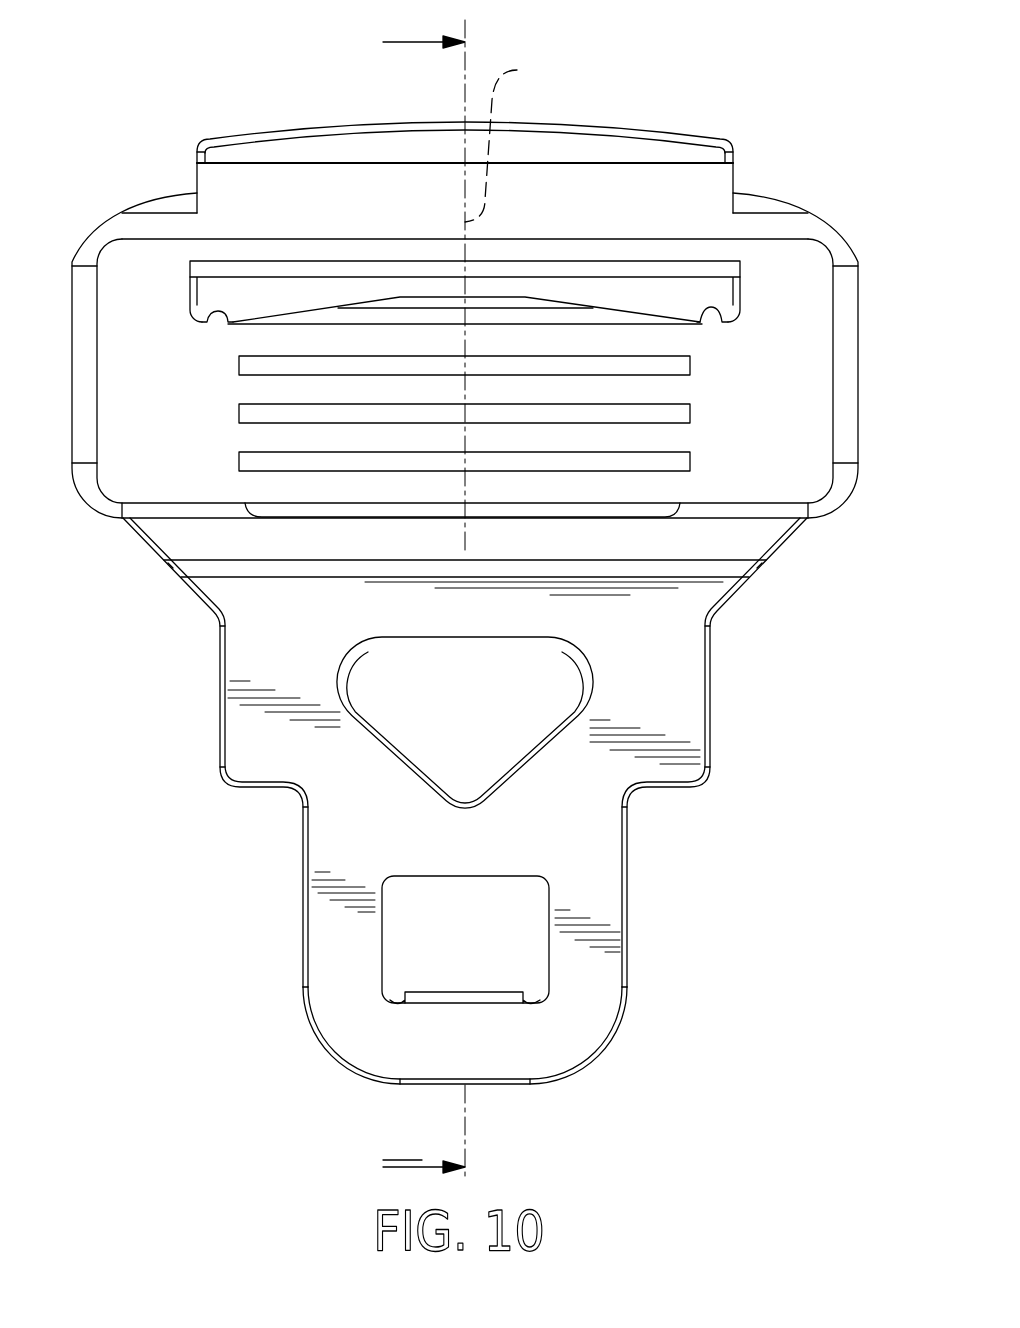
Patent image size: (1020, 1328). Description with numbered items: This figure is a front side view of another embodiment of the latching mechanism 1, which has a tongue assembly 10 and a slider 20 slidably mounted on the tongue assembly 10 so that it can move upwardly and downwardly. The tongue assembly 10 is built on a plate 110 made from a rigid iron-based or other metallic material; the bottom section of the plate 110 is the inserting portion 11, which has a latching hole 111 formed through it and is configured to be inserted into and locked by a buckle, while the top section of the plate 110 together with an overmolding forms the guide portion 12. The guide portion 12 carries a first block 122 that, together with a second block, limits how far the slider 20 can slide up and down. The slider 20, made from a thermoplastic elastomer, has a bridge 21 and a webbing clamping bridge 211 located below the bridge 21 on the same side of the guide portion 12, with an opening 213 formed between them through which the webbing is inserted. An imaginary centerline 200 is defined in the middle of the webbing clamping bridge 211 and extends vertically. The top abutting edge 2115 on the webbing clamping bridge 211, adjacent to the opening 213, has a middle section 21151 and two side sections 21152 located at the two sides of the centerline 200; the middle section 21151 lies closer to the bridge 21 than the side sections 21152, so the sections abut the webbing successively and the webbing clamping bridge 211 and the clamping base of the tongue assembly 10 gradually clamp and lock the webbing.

The latching mechanism 1 is at (463, 591).
The tongue assembly 10 is at (254, 827).
The inserting portion 11 is at (332, 1065).
The guide portion 12 is at (222, 124).
The slider 20 is at (136, 190).
The bridge 21 is at (345, 250).
The plate 110 is at (550, 825).
The latching hole 111 is at (527, 946).
The first block 122 is at (413, 146).
The imaginary centerline 200 is at (518, 137).
The webbing clamping bridge 211 is at (638, 438).
The opening 213 is at (262, 296).
The top abutting edge 2115 is at (524, 296).
The middle section 21151 is at (492, 298).
The side sections 21152 is at (216, 322).